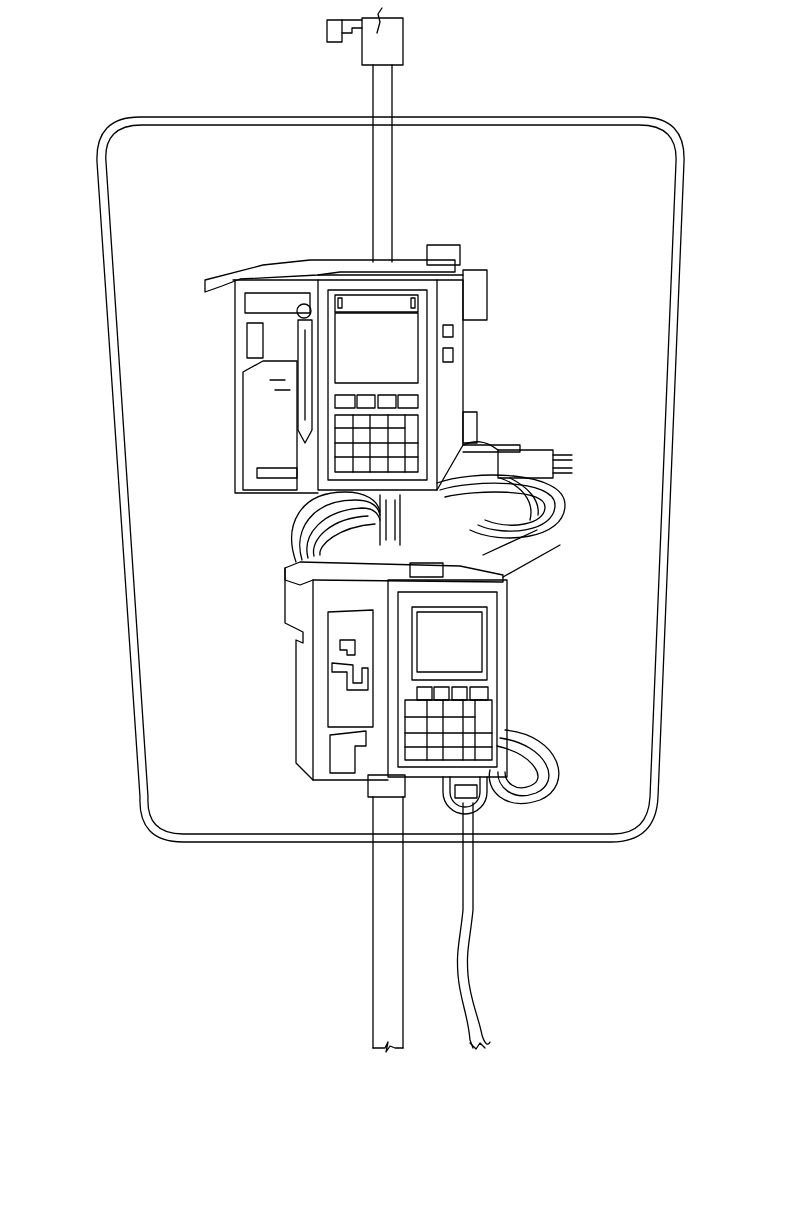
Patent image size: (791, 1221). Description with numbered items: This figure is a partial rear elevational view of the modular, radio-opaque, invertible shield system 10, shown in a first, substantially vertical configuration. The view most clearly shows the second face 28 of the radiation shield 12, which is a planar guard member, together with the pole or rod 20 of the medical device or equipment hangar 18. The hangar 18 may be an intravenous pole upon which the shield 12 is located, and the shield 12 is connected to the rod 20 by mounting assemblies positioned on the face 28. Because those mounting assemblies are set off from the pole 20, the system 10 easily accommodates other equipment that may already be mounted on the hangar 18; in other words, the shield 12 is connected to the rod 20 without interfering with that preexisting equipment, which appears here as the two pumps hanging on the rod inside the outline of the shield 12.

The shield system 10 is at (193, 88).
The radiation shield 12 is at (100, 298).
The second face 28 is at (224, 800).
The pole 20 is at (383, 205).
The hangar 18 is at (335, 917).